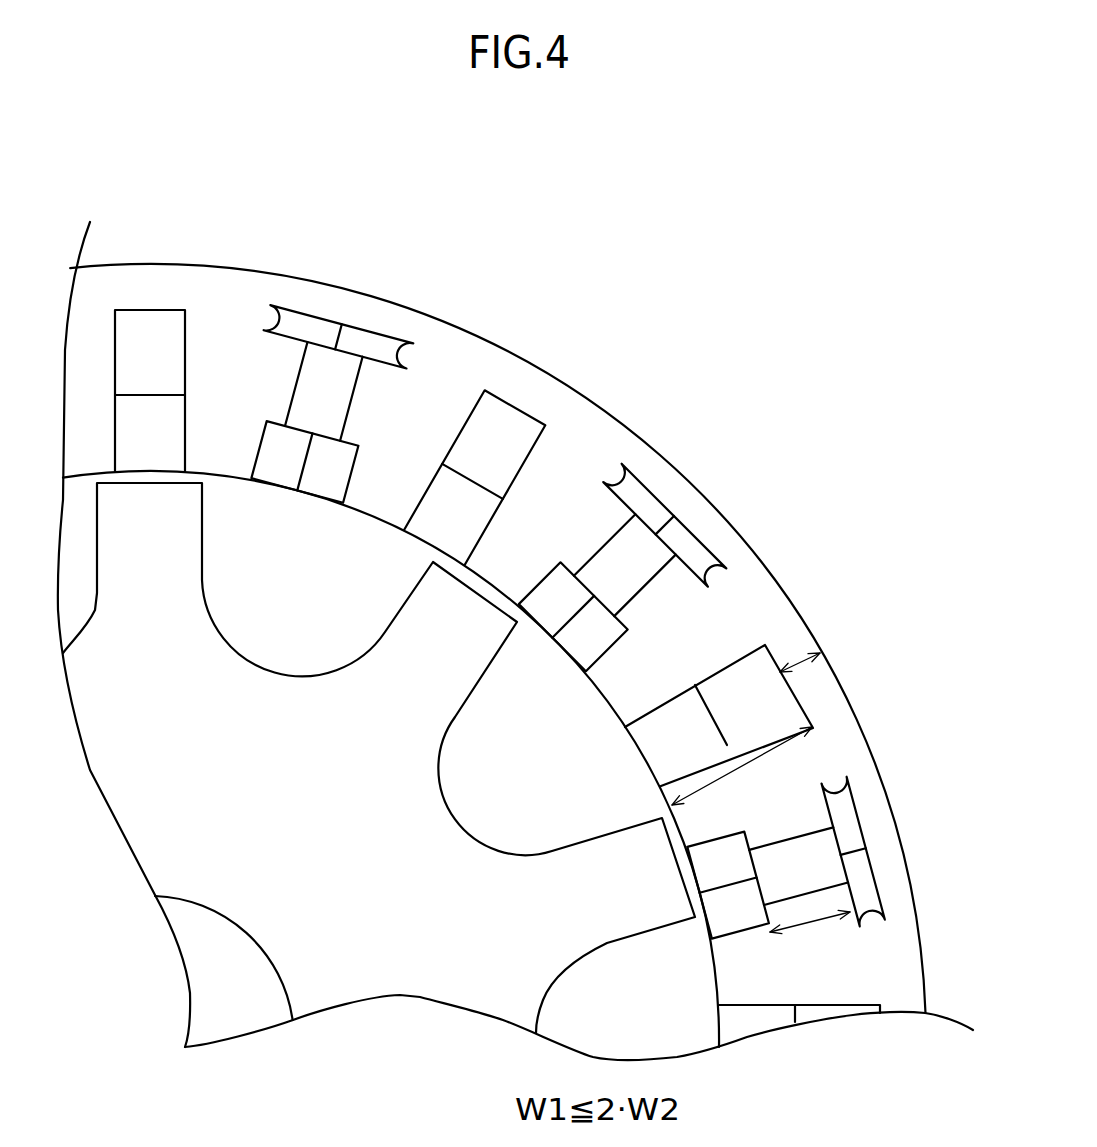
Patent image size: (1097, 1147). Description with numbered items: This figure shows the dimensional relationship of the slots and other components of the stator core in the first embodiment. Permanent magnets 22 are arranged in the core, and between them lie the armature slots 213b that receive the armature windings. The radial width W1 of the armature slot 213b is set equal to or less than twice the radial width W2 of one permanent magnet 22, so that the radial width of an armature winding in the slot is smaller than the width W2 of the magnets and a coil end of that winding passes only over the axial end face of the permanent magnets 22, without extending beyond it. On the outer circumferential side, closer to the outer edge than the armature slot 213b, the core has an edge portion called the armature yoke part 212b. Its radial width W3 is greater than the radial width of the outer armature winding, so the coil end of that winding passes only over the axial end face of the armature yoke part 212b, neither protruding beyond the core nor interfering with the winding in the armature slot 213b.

The permanent magnet 22 is at (300, 393).
The armature yoke part 212b is at (795, 643).
The armature slot 213b is at (660, 758).
The radial width of the armature slot W1 is at (742, 766).
The radial width of the permanent magnet W2 is at (810, 937).
The radial width of the armature yoke part W3 is at (800, 663).